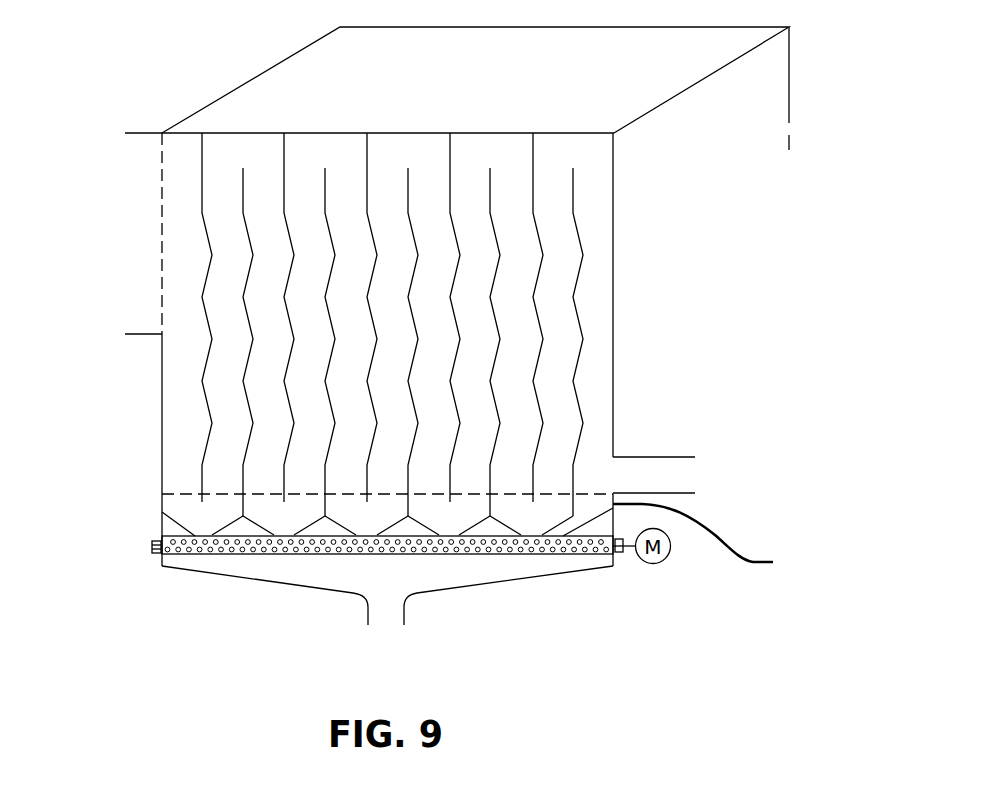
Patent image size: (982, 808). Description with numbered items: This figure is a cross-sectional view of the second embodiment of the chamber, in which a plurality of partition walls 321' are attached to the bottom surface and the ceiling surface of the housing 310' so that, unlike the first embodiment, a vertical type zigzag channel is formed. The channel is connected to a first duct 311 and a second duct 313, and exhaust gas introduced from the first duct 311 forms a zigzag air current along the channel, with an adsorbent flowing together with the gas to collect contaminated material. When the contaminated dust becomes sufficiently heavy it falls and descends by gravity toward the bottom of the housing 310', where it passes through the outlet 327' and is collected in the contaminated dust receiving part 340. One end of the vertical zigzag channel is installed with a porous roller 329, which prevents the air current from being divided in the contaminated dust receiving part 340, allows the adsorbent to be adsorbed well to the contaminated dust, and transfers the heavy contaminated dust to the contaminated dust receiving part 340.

The housing 310' is at (475, 325).
The partition walls 321' is at (333, 324).
The second duct 313 is at (133, 296).
The first duct 311 is at (667, 468).
The outlet 327' is at (349, 519).
The porous roller 329 is at (168, 553).
The contaminated dust receiving part 340 is at (721, 541).